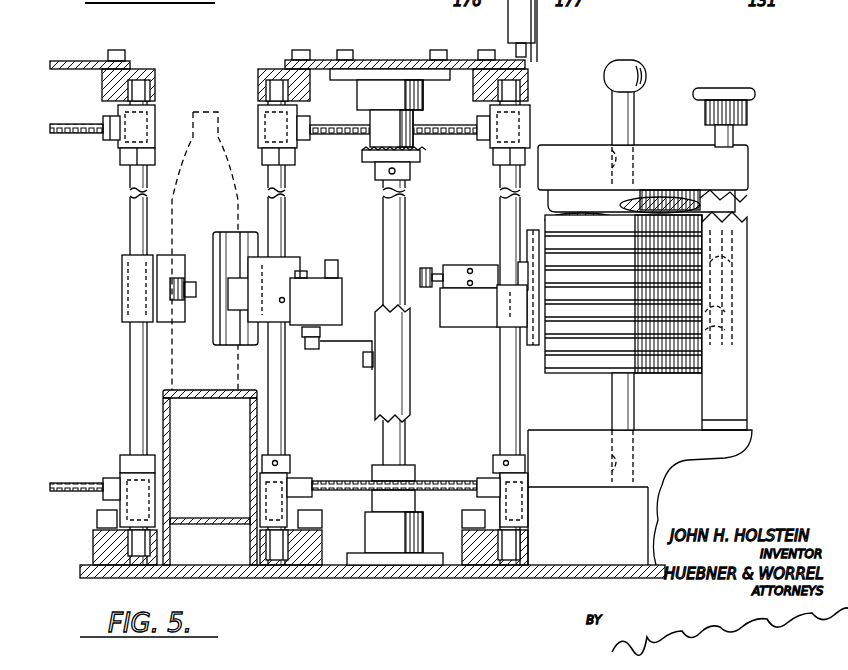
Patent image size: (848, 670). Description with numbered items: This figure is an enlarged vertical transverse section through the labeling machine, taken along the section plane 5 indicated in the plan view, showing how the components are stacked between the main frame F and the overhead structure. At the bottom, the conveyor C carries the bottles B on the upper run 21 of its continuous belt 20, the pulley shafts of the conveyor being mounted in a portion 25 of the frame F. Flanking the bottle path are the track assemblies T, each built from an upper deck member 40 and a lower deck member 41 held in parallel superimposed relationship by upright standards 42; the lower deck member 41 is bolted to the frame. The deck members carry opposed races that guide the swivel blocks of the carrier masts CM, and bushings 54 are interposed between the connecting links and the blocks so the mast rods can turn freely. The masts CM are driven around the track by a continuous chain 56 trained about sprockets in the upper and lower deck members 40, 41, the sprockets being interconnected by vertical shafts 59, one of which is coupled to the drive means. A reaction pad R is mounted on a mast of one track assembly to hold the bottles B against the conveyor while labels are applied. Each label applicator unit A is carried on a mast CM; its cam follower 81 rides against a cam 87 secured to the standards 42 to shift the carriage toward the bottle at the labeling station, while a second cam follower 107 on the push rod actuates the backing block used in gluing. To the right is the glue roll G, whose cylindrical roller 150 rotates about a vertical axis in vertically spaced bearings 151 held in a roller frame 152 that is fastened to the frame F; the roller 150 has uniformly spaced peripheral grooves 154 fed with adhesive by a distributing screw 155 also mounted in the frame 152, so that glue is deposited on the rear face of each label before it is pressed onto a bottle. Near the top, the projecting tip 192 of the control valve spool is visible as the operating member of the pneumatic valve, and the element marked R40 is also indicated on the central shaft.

The upper deck member 40 is at (512, 78).
The lower deck member 41 is at (528, 555).
The upright standards 42 is at (401, 378).
The bushings 54 is at (262, 478).
The chain end 5 is at (305, 484).
The continuous chain 56 is at (478, 135).
The vertical shafts 59 is at (398, 238).
The cam follower 81 is at (303, 350).
The cam 87 is at (318, 355).
The cam follower 107 is at (440, 272).
The cylindrical roller 150 is at (702, 296).
The bearings 151 is at (620, 152).
The roller frame 152 is at (745, 156).
The peripheral grooves 154 is at (702, 328).
The distributing screw 155 is at (738, 262).
The projecting tip 192 is at (536, 50).
The continuous belt 20 is at (165, 395).
The upper run 21 is at (235, 395).
The frame portion 25 is at (140, 437).
The label applicator units A is at (350, 320).
The bottles B is at (180, 191).
The conveyor C is at (162, 392).
The carrier masts CM is at (668, 312).
The main frame F is at (82, 565).
The glue roll G is at (712, 252).
The reaction pads R is at (120, 280).
The rod R40 is at (420, 272).
The track assemblies T is at (332, 548).